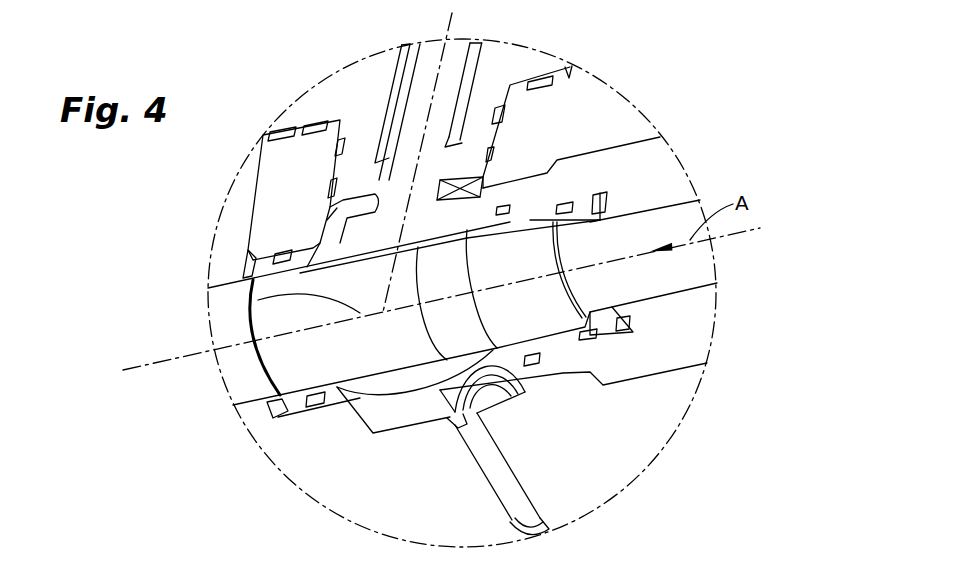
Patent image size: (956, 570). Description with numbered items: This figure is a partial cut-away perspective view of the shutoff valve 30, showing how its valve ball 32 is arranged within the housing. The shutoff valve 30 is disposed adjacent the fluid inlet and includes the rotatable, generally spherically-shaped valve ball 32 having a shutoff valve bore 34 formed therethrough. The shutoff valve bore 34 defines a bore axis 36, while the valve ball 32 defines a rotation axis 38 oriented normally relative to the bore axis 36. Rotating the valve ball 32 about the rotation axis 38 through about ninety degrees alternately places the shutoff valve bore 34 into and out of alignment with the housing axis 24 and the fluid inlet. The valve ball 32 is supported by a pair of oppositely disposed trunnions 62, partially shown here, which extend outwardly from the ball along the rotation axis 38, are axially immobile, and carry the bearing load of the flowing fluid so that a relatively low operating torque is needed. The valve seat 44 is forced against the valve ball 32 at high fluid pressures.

The housing axis 24 is at (726, 237).
The shutoff valve 30 is at (683, 97).
The valve ball 32 is at (533, 383).
The shutoff valve bore 34 is at (310, 335).
The bore axis 36 is at (250, 304).
The rotation axis 38 is at (450, 24).
The valve seat 44 is at (530, 247).
The trunnions 62 is at (442, 92).